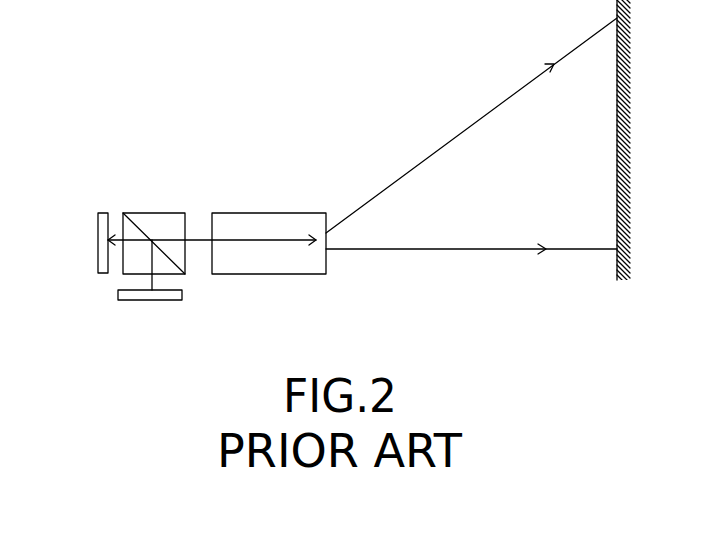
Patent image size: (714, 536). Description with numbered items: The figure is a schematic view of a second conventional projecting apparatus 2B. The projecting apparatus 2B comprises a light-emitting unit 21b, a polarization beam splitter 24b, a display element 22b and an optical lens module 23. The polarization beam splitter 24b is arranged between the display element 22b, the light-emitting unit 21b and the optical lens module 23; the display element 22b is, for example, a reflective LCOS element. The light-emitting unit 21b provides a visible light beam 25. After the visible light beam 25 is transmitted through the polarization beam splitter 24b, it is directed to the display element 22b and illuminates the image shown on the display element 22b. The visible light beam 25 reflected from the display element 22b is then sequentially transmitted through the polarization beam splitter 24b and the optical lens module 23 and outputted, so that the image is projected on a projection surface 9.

The projecting apparatus 2B is at (184, 106).
The display element 22b is at (100, 228).
The polarization beam splitter 24b is at (156, 222).
The optical lens module 23 is at (262, 226).
The projection surface 9 is at (627, 128).
The light-emitting unit 21b is at (122, 295).
The visible light beam 25 is at (153, 283).